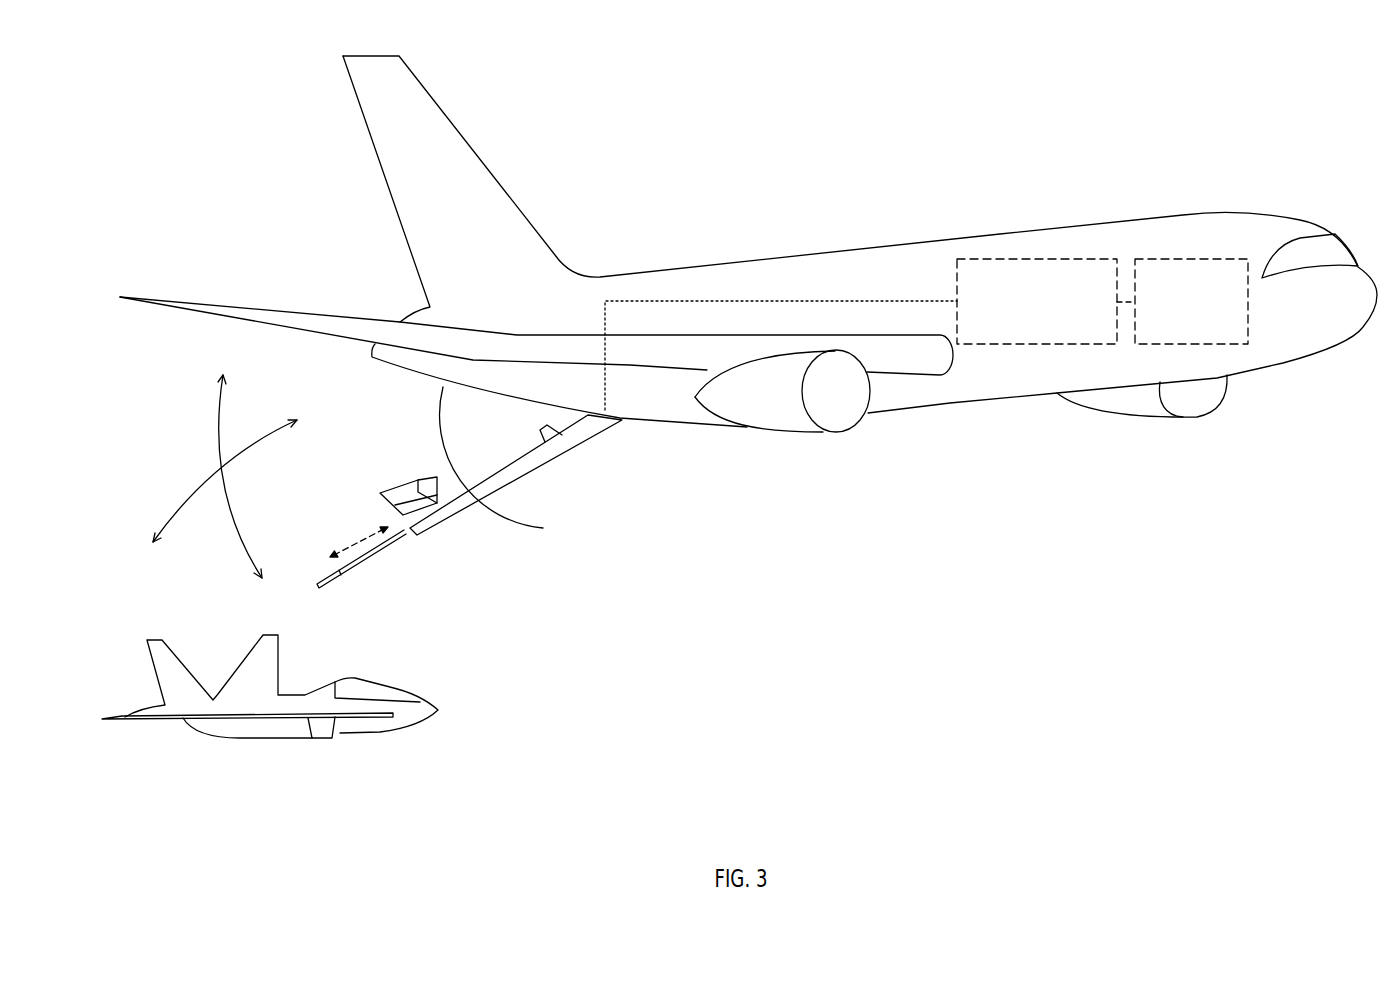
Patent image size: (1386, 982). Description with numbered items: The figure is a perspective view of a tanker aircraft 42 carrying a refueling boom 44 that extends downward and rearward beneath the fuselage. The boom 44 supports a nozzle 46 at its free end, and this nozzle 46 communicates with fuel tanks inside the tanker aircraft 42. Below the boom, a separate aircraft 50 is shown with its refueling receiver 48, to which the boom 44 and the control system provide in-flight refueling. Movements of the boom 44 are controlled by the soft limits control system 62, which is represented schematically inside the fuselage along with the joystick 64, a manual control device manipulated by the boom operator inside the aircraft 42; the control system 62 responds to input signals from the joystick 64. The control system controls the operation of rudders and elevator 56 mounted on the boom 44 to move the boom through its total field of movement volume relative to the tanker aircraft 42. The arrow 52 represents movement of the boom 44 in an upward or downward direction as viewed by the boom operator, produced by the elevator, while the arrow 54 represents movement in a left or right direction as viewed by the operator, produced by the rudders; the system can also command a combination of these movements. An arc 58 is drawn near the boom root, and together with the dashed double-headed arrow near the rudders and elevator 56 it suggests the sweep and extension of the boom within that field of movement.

The tanker aircraft 42 is at (1278, 212).
The refueling boom 44 is at (495, 493).
The nozzle 46 is at (322, 590).
The refueling receiver 48 is at (304, 733).
The separate aircraft 50 is at (242, 737).
The arrow 52 is at (218, 437).
The arrow 54 is at (163, 515).
The rudders and elevator 56 is at (380, 520).
The boom envelope 58 is at (442, 428).
The soft limits control system 62 is at (1046, 301).
The joystick 64 is at (1191, 301).